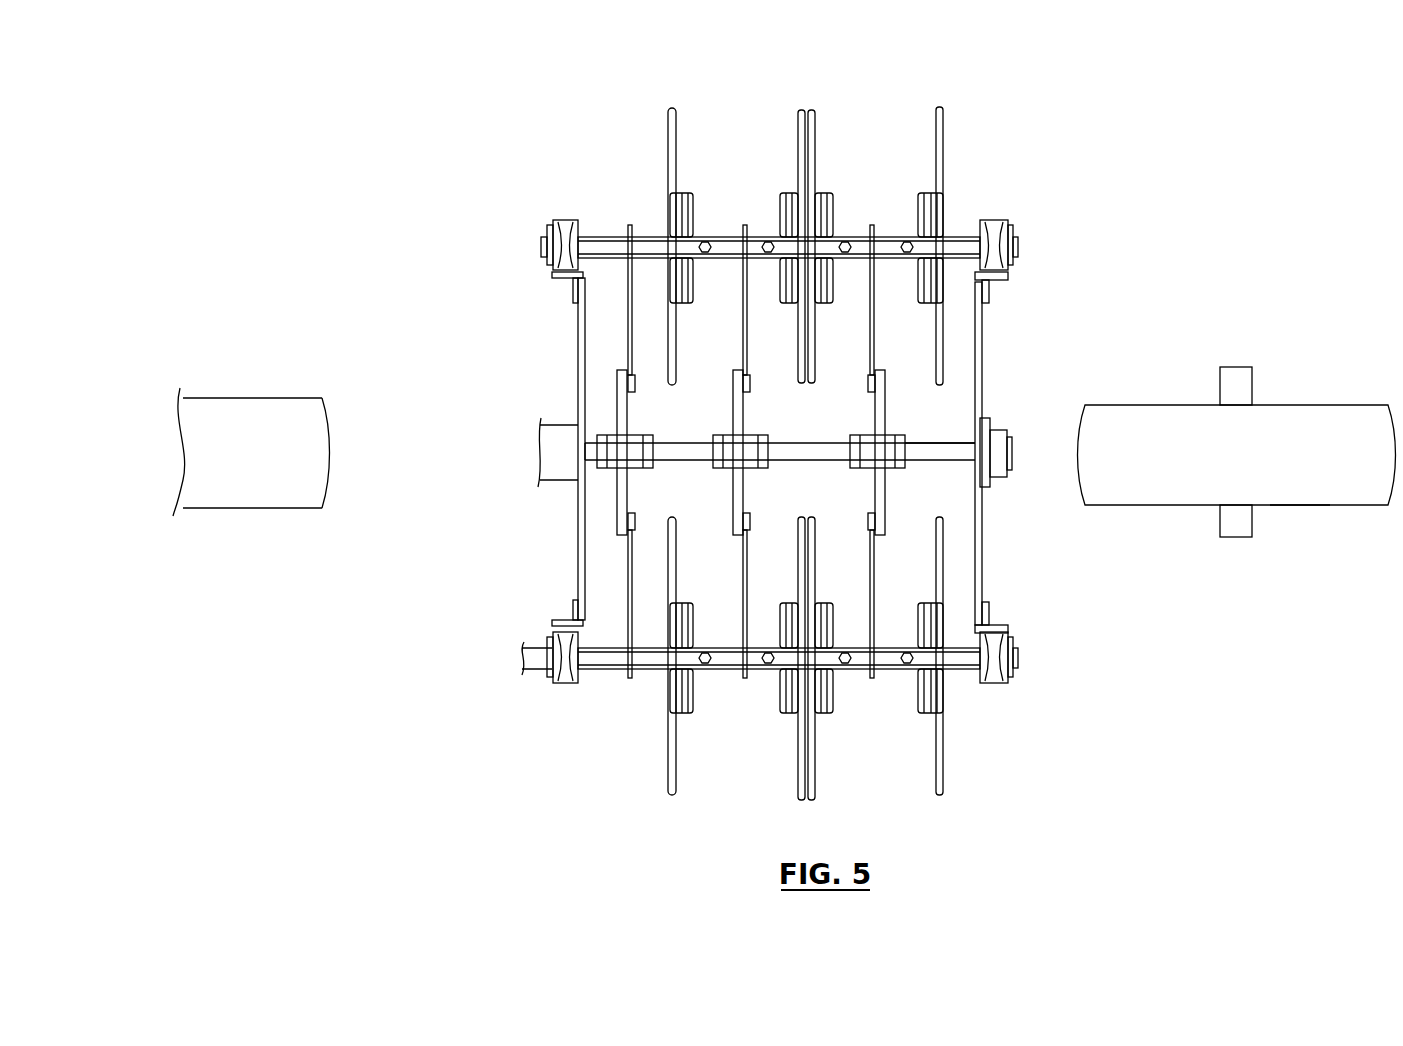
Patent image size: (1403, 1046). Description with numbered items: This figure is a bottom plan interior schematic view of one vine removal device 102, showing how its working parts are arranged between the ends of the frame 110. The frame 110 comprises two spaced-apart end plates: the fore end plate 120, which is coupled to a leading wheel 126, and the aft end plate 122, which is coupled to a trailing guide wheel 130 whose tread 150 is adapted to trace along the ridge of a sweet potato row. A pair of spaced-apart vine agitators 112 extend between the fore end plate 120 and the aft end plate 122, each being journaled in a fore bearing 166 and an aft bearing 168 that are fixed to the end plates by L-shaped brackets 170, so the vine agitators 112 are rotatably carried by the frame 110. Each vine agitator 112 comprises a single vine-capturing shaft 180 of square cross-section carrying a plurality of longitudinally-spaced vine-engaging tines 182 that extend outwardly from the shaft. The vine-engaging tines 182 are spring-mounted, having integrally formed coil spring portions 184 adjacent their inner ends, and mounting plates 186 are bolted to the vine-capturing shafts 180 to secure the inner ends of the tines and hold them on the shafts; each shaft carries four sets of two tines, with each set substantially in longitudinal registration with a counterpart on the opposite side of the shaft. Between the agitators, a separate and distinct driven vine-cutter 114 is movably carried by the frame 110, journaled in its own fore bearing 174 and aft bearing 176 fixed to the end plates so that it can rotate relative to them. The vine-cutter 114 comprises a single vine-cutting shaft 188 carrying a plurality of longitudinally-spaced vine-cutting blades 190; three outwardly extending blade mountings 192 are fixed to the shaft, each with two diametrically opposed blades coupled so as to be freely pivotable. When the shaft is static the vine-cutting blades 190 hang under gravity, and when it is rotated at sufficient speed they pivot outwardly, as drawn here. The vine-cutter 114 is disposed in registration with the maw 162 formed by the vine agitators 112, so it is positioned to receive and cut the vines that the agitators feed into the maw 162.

The vine removal device 102 is at (706, 451).
The frame 110 is at (779, 450).
The vine agitators 112 is at (777, 451).
The driven vine-cutter 114 is at (696, 452).
The fore end plate 120 is at (578, 543).
The aft end plate 122 is at (982, 562).
The leading wheel 126 is at (276, 400).
The trailing guide wheel 130 is at (1298, 505).
The tread 150 is at (1217, 457).
The maw 162 is at (764, 448).
The fore bearing 166 is at (561, 228).
The aft bearing 168 is at (994, 228).
The L-shaped brackets 170 is at (567, 282).
The fore bearing 174 is at (555, 481).
The aft bearing 176 is at (1000, 433).
The vine-capturing shaft 180 is at (649, 247).
The vine-engaging tines 182 is at (936, 108).
The coil spring portions 184 is at (770, 305).
The mounting plates 186 is at (698, 303).
The vine-cutting shaft 188 is at (952, 447).
The vine-cutting blades 190 is at (627, 277).
The blade mountings 192 is at (606, 412).